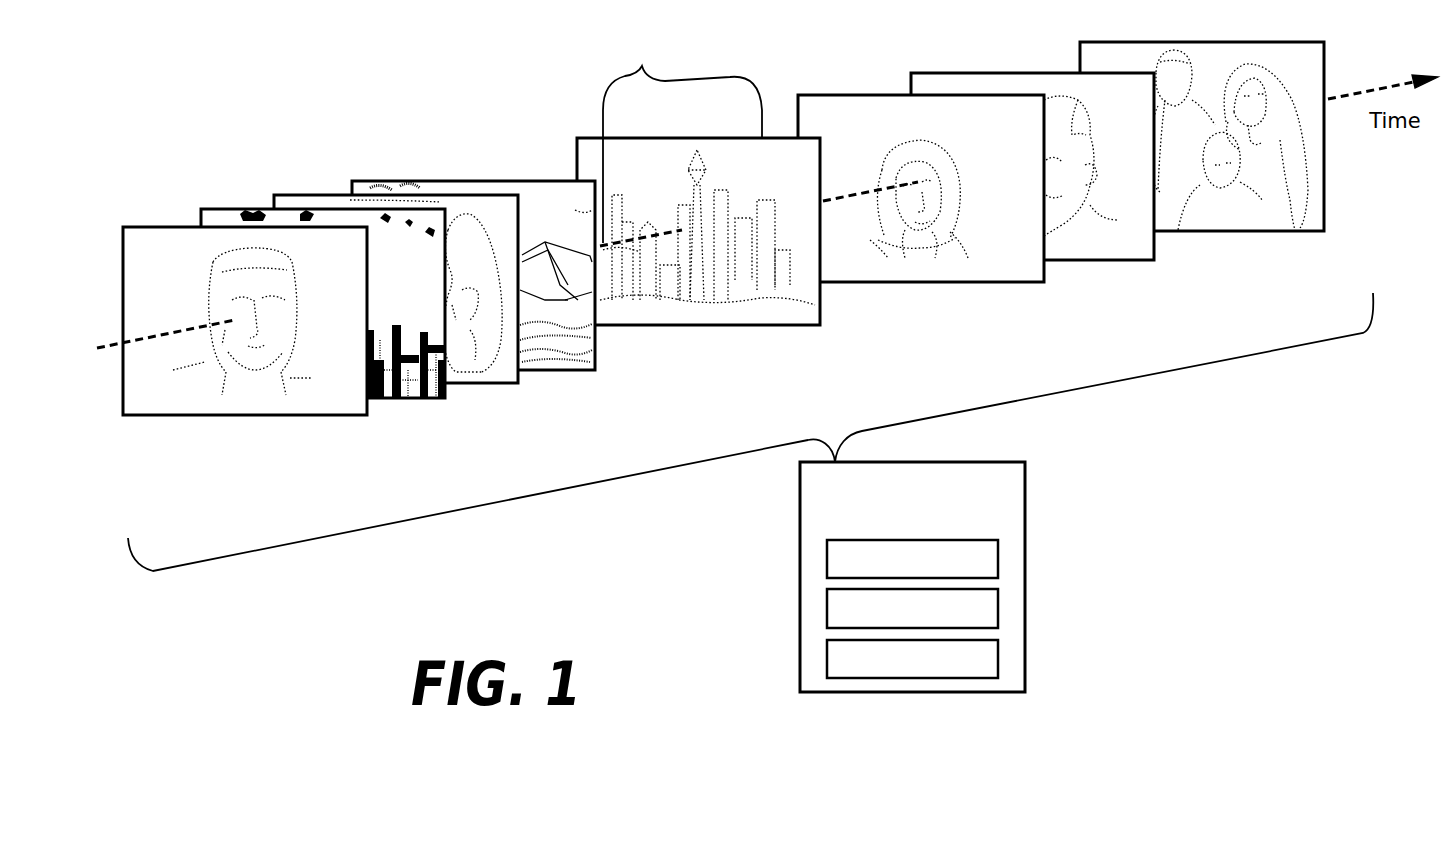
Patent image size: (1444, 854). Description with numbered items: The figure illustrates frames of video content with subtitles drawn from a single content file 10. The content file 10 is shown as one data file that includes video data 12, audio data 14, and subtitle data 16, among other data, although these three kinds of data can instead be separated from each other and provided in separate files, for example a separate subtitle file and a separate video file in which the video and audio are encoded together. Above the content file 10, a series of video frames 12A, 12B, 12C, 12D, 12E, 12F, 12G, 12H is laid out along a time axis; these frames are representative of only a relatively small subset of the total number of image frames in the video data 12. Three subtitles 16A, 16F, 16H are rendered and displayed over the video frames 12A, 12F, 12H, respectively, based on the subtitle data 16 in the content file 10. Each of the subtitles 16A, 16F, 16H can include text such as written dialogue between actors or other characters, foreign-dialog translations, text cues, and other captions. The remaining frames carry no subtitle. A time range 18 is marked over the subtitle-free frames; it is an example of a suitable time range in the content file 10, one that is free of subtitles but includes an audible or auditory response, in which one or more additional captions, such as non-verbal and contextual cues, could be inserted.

The content file 10 is at (912, 577).
The video data 12 is at (912, 559).
The audio data 14 is at (912, 608).
The subtitle data 16 is at (912, 659).
The time range 18 is at (682, 139).
The video frame 12A is at (248, 355).
The video frame 12B is at (437, 383).
The video frame 12C is at (510, 363).
The video frame 12D is at (583, 352).
The video frame 12E is at (807, 312).
The video frame 12F is at (924, 221).
The video frame 12G is at (1142, 242).
The video frame 12H is at (1308, 222).
The subtitle 16A is at (255, 405).
The subtitle 16F is at (927, 267).
The subtitle 16H is at (1220, 218).